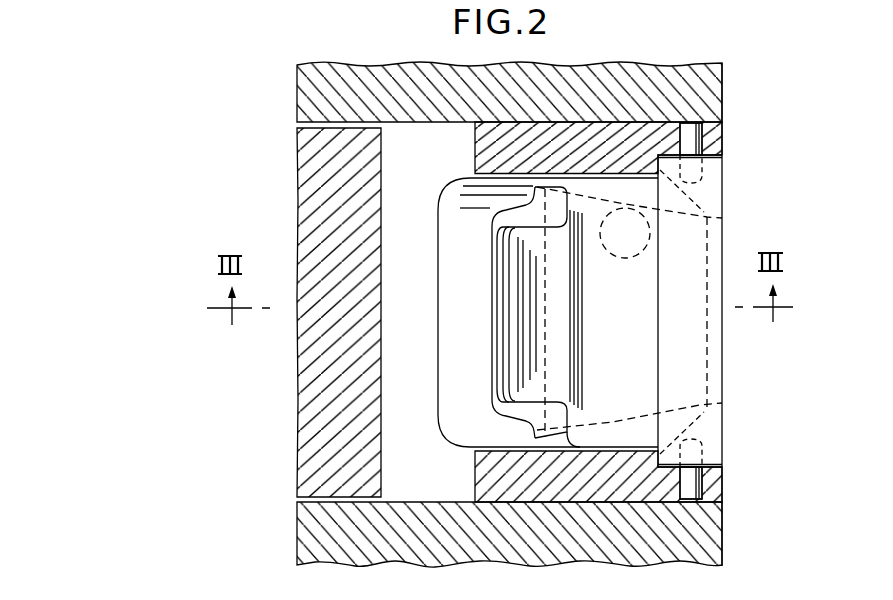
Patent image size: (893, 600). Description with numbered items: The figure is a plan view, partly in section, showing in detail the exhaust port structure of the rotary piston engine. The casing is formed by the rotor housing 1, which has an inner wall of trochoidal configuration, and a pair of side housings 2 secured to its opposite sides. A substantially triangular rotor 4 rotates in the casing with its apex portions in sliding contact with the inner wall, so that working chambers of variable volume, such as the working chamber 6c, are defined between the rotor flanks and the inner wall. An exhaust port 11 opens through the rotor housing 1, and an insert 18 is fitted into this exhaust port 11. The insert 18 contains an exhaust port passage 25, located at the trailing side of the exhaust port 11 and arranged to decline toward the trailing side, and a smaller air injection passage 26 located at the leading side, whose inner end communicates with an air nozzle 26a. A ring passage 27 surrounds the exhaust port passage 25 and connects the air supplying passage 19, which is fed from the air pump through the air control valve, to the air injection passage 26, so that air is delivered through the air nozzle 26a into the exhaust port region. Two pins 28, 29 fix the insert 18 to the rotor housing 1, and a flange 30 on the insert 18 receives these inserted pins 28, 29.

The rotor housing 1 is at (717, 148).
The side housings 2 is at (307, 87).
The rotor 4 is at (362, 167).
The working chamber 6c is at (419, 279).
The exhaust port 11 is at (474, 258).
The insert 18 is at (730, 219).
The air supplying passage 19 is at (613, 259).
The exhaust port passage 25 is at (537, 430).
The air injection passage 26 is at (497, 413).
The air nozzle 26a is at (498, 318).
The ring passage 27 is at (613, 430).
The pin 28 is at (704, 132).
The pin 29 is at (704, 485).
The flange 30 is at (710, 433).